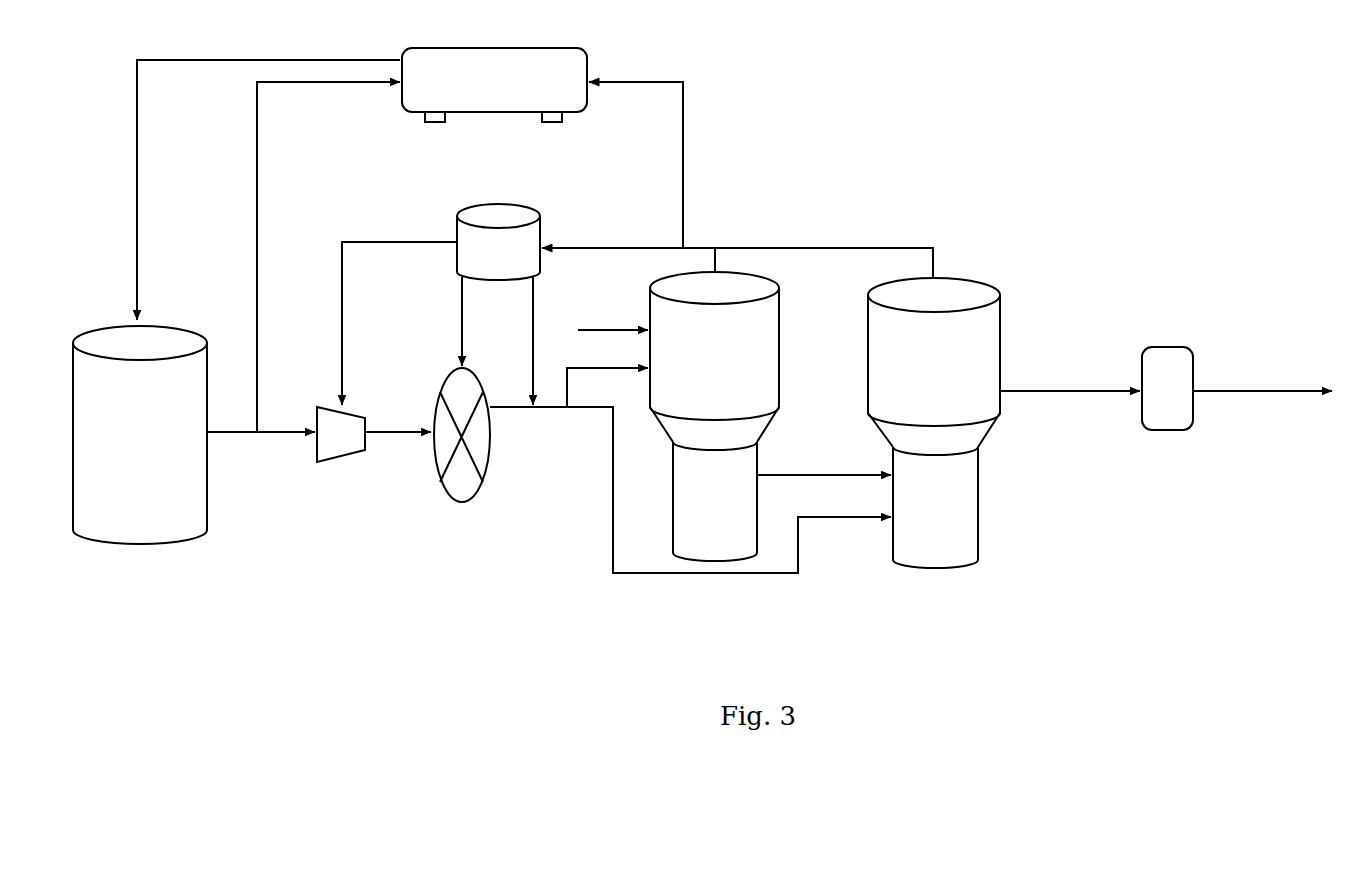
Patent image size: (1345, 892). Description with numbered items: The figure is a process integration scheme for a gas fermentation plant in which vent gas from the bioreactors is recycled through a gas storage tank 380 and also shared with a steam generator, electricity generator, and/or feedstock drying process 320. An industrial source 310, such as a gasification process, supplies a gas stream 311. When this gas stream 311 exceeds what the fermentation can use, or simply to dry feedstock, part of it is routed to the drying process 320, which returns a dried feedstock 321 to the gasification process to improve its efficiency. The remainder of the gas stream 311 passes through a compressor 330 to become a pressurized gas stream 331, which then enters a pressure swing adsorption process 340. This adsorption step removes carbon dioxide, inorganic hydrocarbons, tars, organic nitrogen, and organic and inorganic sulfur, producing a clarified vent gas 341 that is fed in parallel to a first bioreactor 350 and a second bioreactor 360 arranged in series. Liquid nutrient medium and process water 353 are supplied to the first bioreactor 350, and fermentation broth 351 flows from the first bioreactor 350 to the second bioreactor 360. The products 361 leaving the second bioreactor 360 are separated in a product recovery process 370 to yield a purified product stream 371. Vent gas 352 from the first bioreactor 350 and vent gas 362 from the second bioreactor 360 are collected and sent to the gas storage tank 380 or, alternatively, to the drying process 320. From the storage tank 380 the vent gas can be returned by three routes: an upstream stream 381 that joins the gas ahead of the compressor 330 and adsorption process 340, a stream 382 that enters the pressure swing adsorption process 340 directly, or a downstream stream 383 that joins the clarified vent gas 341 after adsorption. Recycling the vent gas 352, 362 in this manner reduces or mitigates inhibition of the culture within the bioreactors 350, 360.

The industrial source 310 is at (140, 435).
The gas stream 311 is at (303, 274).
The feedstock drying process 320 is at (494, 85).
The dried feedstock 321 is at (268, 178).
The compressor 330 is at (341, 434).
The pressurized gas stream 331 is at (398, 448).
The pressure swing adsorption process 340 is at (462, 449).
The clarified vent gas 341 is at (690, 470).
The first bioreactor 350 is at (714, 416).
The fermentation broth 351 is at (824, 465).
The vent gas 352 is at (736, 261).
The liquid nutrient medium and process water 353 is at (613, 318).
The second bioreactor 360 is at (934, 423).
The products 361 is at (1070, 380).
The vent gas 362 is at (737, 251).
The product recovery process 370 is at (1167, 388).
The purified product stream 371 is at (1262, 377).
The gas storage tank 380 is at (498, 242).
The upstream vent gas stream 381 is at (399, 313).
The vent gas stream into pressure swing adsorption 382 is at (442, 321).
The downstream vent gas stream 383 is at (517, 341).